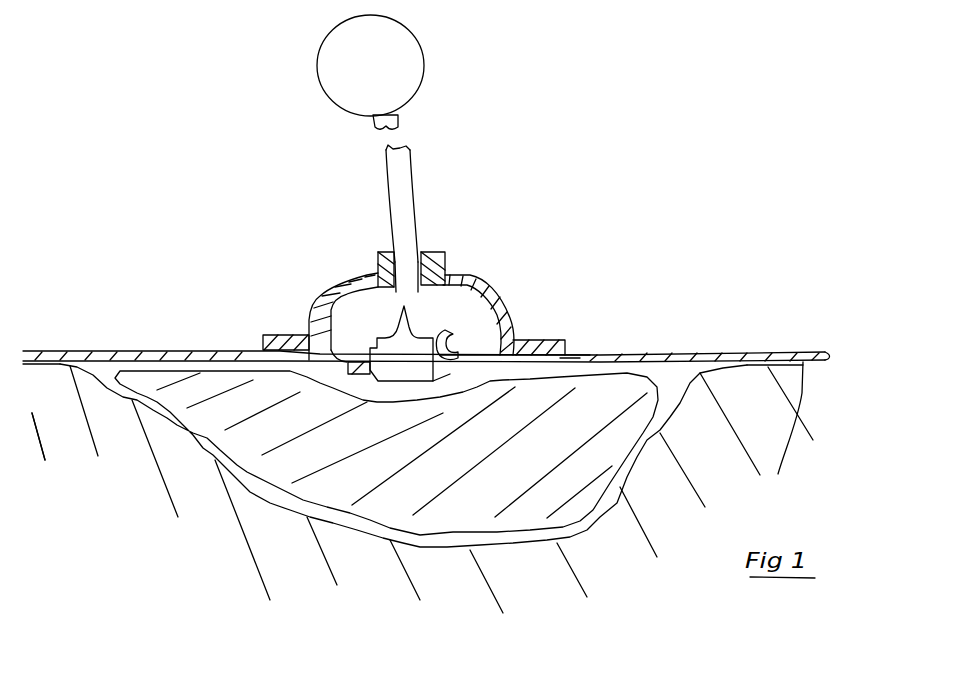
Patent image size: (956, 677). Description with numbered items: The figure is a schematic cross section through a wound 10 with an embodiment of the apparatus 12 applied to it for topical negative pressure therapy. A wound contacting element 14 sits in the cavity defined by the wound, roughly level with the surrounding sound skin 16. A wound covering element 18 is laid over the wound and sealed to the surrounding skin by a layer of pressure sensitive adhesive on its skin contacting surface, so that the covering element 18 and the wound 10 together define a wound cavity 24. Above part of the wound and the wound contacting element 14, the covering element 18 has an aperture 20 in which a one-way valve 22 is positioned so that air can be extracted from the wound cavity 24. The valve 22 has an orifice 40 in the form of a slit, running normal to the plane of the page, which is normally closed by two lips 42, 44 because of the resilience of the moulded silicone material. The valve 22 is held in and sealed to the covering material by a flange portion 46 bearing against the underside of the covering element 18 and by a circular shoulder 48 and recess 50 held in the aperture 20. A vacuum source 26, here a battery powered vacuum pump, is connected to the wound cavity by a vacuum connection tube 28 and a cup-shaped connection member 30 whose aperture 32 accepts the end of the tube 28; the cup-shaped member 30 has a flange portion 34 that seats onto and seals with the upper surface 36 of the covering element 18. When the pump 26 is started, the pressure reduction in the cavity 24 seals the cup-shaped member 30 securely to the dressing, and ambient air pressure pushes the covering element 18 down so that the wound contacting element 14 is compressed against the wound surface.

The wound 10 is at (203, 452).
The apparatus 12 is at (568, 100).
The wound contacting element 14 is at (416, 457).
The surrounding sound skin 16 is at (418, 487).
The wound covering element 18 is at (673, 358).
The aperture 20 is at (441, 350).
The one-way valve 22 is at (434, 333).
The wound cavity 24 is at (273, 336).
The vacuum source 26 is at (428, 56).
The vacuum connection tube 28 is at (392, 120).
The cup-shaped connection member 30 is at (447, 261).
The aperture 32 is at (420, 262).
The flange portion 34 is at (267, 335).
The upper surface 36 is at (593, 354).
The orifice 40 is at (382, 276).
The lip 42 is at (402, 323).
The lip 44 is at (409, 307).
The flange portion 46 is at (308, 360).
The circular shoulder 48 is at (438, 355).
The recess 50 is at (571, 353).